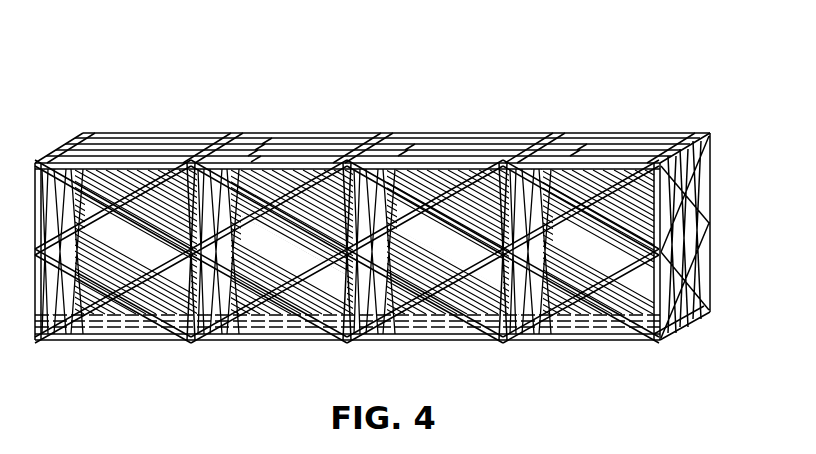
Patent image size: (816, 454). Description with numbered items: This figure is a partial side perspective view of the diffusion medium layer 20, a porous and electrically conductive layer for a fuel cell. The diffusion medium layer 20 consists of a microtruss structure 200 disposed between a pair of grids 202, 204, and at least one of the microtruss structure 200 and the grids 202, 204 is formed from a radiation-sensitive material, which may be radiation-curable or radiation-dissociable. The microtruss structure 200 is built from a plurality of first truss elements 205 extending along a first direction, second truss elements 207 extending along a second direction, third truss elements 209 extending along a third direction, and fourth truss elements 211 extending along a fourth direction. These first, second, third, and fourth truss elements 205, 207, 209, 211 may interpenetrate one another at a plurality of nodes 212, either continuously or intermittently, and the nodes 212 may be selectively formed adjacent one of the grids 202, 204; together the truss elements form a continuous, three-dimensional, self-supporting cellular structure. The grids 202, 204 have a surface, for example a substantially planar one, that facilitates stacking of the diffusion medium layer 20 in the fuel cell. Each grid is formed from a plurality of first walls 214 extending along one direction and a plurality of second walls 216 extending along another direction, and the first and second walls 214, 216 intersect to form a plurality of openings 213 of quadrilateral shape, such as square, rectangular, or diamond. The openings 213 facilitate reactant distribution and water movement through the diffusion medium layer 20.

The diffusion medium layer 20 is at (411, 198).
The microtruss structure 200 is at (716, 264).
The grid 202 is at (712, 134).
The grid 204 is at (679, 318).
The first truss elements 205 is at (450, 283).
The second truss elements 207 is at (380, 263).
The third truss elements 209 is at (320, 283).
The fourth truss elements 211 is at (357, 221).
The nodes 212 is at (190, 300).
The openings 213 is at (603, 138).
The first walls 214 is at (227, 141).
The second walls 216 is at (266, 143).